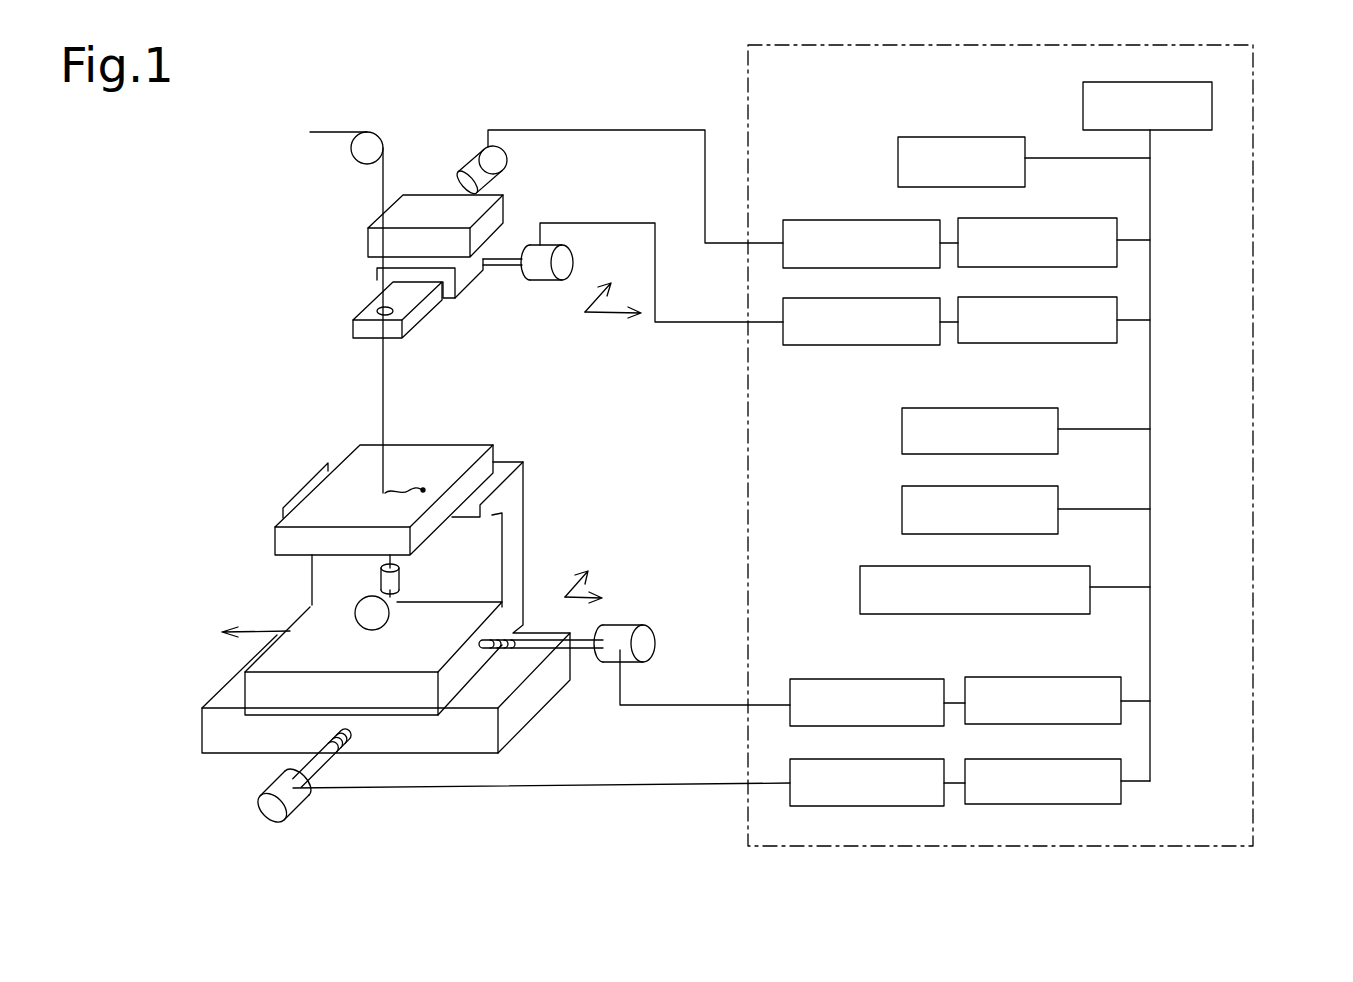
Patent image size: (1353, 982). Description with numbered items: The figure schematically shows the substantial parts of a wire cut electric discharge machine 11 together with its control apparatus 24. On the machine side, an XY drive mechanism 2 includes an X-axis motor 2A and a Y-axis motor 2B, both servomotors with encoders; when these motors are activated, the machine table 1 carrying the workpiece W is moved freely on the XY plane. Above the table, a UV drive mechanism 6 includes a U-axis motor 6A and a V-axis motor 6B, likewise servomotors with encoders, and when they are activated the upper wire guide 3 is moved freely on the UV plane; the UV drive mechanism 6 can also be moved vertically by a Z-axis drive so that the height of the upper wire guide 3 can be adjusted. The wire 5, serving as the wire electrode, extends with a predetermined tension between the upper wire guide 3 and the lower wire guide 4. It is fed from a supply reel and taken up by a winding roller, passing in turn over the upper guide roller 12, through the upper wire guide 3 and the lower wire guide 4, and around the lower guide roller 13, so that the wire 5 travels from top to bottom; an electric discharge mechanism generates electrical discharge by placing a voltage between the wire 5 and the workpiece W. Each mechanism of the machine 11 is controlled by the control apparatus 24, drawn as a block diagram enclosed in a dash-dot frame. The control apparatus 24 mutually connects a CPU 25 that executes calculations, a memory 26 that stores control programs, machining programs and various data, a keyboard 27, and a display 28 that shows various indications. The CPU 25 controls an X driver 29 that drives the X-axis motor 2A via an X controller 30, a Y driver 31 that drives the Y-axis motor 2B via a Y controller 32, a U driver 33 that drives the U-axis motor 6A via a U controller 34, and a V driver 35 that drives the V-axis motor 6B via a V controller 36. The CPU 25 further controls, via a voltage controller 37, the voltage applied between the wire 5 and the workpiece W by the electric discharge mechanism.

The machine table 1 is at (313, 492).
The XY drive mechanism 2 is at (558, 714).
The X-axis motor 2A is at (630, 628).
The Y-axis motor 2B is at (268, 778).
The upper wire guide 3 is at (378, 306).
The lower wire guide 4 is at (381, 583).
The wire 5 is at (388, 379).
The UV drive mechanism 6 is at (518, 198).
The U-axis motor 6A is at (539, 272).
The V-axis motor 6B is at (473, 157).
The wire cut electric discharge machine 11 is at (233, 218).
The upper guide roller 12 is at (358, 150).
The lower guide roller 13 is at (357, 620).
The workpiece W is at (443, 458).
The control apparatus 24 is at (1253, 430).
The CPU 25 is at (1153, 74).
The memory 26 is at (967, 132).
The keyboard 27 is at (969, 404).
The display 28 is at (969, 483).
The X driver 29 is at (868, 675).
The X controller 30 is at (1045, 673).
The Y driver 31 is at (868, 755).
The Y controller 32 is at (1045, 753).
The U driver 33 is at (865, 295).
The U controller 34 is at (1038, 292).
The V driver 35 is at (865, 217).
The V controller 36 is at (1038, 213).
The voltage controller 37 is at (1010, 562).